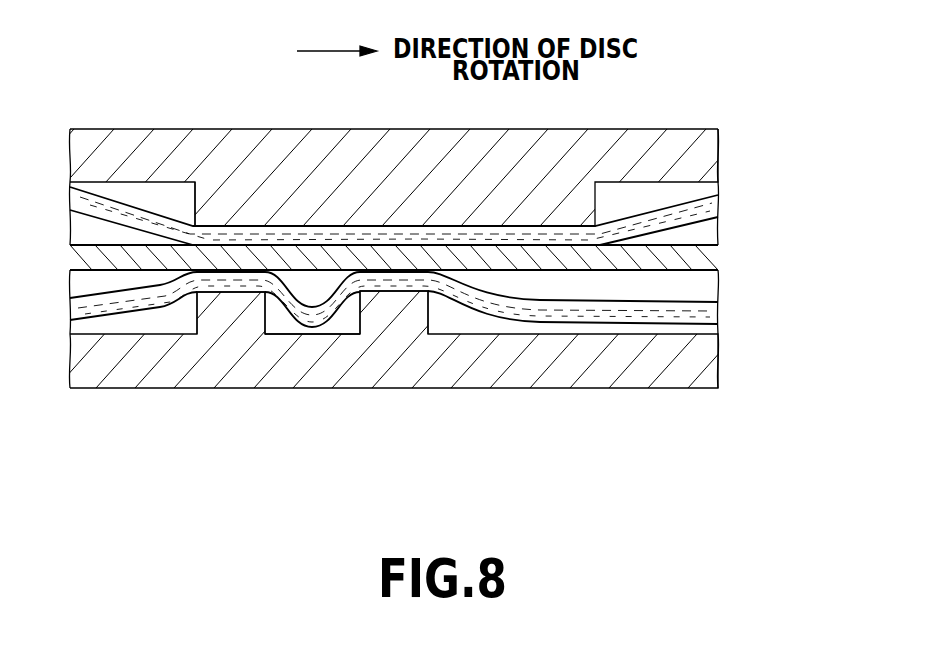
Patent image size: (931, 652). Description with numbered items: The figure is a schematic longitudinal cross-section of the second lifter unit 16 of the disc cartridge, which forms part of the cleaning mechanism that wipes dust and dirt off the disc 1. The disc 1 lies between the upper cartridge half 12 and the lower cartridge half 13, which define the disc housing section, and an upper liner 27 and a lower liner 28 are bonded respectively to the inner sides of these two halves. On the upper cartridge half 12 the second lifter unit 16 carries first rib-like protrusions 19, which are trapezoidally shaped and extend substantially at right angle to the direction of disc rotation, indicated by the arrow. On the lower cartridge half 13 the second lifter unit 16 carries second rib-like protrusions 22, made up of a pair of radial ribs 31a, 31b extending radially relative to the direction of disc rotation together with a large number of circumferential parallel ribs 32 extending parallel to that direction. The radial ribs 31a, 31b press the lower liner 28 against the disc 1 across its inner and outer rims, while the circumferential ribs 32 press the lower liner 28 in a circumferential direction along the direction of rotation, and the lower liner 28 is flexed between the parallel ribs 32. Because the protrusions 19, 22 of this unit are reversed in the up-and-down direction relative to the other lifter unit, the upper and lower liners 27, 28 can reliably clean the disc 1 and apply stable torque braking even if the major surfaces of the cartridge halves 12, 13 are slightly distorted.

The second lifter unit 16 is at (405, 251).
The first rib-like protrusions 19 is at (195, 197).
The upper cartridge half 12 is at (710, 152).
The upper liner 27 is at (710, 203).
The disc 1 is at (712, 253).
The lower liner 28 is at (712, 313).
The lower cartridge half 13 is at (715, 365).
The radial rib 31a is at (197, 305).
The radial rib 31b is at (360, 328).
The circumferential parallel ribs 32 is at (398, 368).
The second rib-like protrusions 22 is at (313, 397).